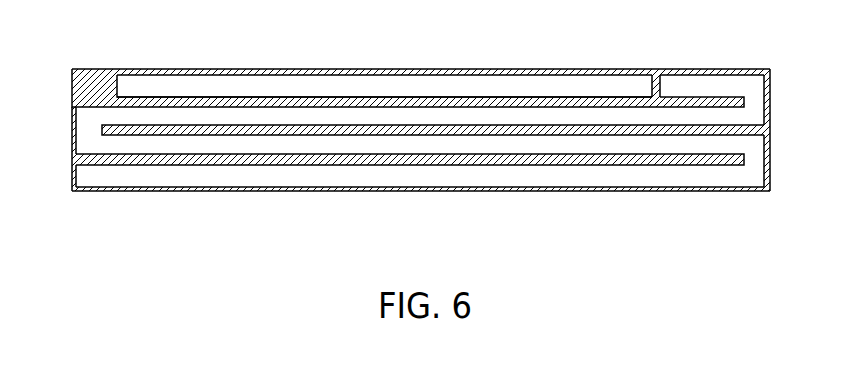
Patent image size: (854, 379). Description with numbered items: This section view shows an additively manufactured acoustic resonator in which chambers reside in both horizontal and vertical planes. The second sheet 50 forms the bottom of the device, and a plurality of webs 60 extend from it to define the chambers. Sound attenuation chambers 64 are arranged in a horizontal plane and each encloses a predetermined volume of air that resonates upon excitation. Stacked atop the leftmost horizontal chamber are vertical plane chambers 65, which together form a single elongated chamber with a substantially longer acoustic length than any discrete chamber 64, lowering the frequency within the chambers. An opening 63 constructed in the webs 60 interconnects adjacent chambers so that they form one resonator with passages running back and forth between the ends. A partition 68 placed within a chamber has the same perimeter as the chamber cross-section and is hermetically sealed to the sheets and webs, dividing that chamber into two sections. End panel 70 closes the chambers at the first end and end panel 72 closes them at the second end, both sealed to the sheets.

The second sheet 50 is at (650, 191).
The webs 60 is at (303, 103).
The opening 63 is at (756, 179).
The sound attenuation chambers 64 is at (494, 189).
The vertical plane chambers 65 is at (567, 104).
The partition 68 is at (664, 77).
The end panel 70 is at (72, 170).
The end panel 72 is at (770, 105).